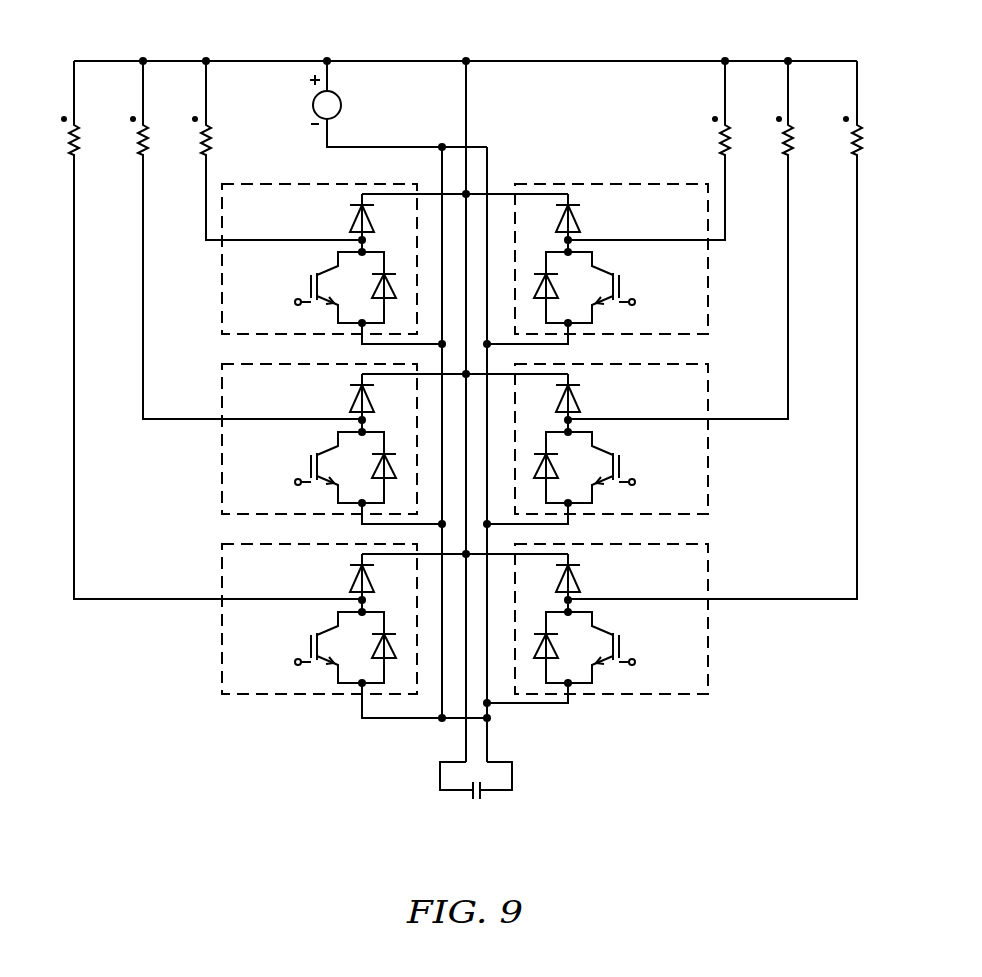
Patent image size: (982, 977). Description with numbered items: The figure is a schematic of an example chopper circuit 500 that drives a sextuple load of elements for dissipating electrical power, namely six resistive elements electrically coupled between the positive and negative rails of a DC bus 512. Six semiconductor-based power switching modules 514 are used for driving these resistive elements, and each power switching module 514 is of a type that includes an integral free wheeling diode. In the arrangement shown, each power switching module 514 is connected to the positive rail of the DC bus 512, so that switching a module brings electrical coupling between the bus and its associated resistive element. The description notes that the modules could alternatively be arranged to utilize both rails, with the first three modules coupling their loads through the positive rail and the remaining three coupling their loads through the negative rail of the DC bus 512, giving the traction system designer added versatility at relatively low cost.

The chopper circuit 500 is at (689, 27).
The DC bus 512 is at (515, 48).
The power switching module 514 is at (720, 522).